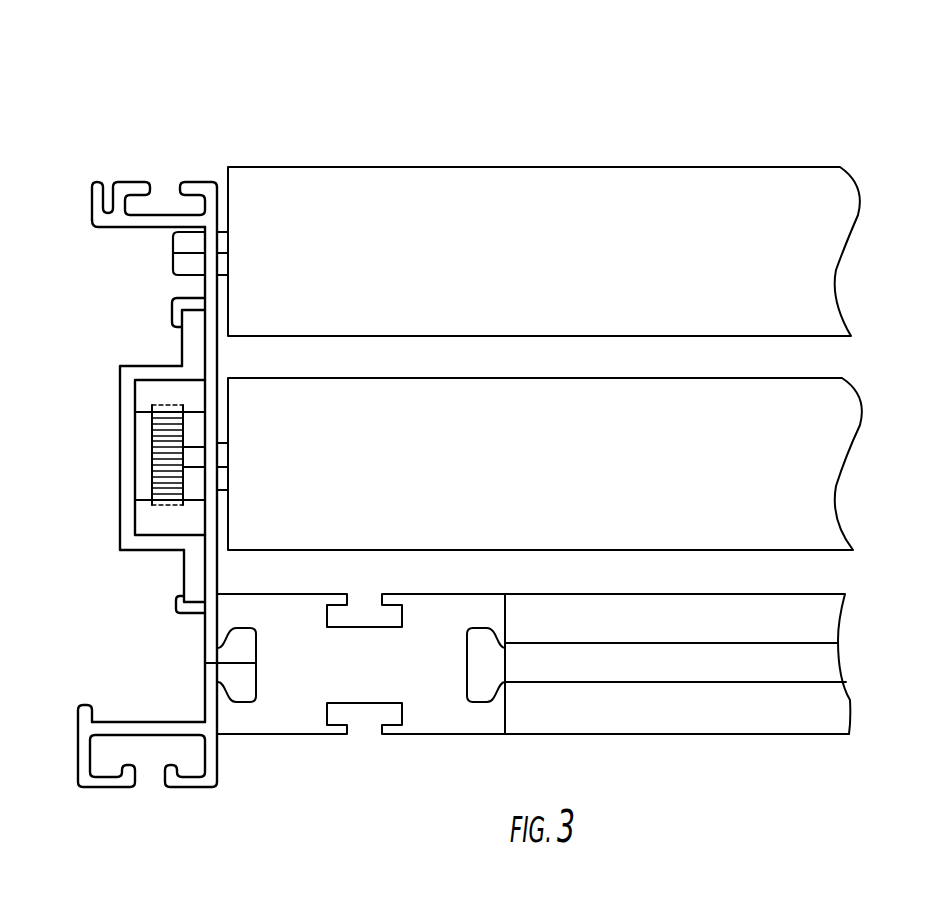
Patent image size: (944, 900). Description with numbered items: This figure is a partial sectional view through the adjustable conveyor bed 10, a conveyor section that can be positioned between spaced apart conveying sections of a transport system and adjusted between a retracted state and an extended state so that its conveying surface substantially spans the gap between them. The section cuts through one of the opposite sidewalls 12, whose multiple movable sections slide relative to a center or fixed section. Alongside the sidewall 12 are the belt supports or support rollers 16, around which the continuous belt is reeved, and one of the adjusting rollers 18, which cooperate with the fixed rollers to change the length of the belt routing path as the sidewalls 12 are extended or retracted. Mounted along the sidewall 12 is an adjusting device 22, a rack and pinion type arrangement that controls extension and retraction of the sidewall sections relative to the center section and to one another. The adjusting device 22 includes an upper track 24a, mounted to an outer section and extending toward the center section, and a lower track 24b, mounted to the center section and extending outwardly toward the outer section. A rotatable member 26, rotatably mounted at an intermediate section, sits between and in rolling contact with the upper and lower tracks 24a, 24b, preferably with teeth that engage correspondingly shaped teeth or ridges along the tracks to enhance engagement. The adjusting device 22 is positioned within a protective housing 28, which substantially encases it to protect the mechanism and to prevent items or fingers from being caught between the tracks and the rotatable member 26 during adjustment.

The adjustable conveyor bed 10 is at (270, 108).
The sidewall 12 is at (121, 164).
The support roller 16 is at (437, 176).
The adjusting roller 18 is at (440, 535).
The adjusting device 22 is at (116, 332).
The upper track 24a is at (148, 398).
The lower track 24b is at (153, 523).
The rotatable member 26 is at (153, 477).
The protective housing 28 is at (120, 368).